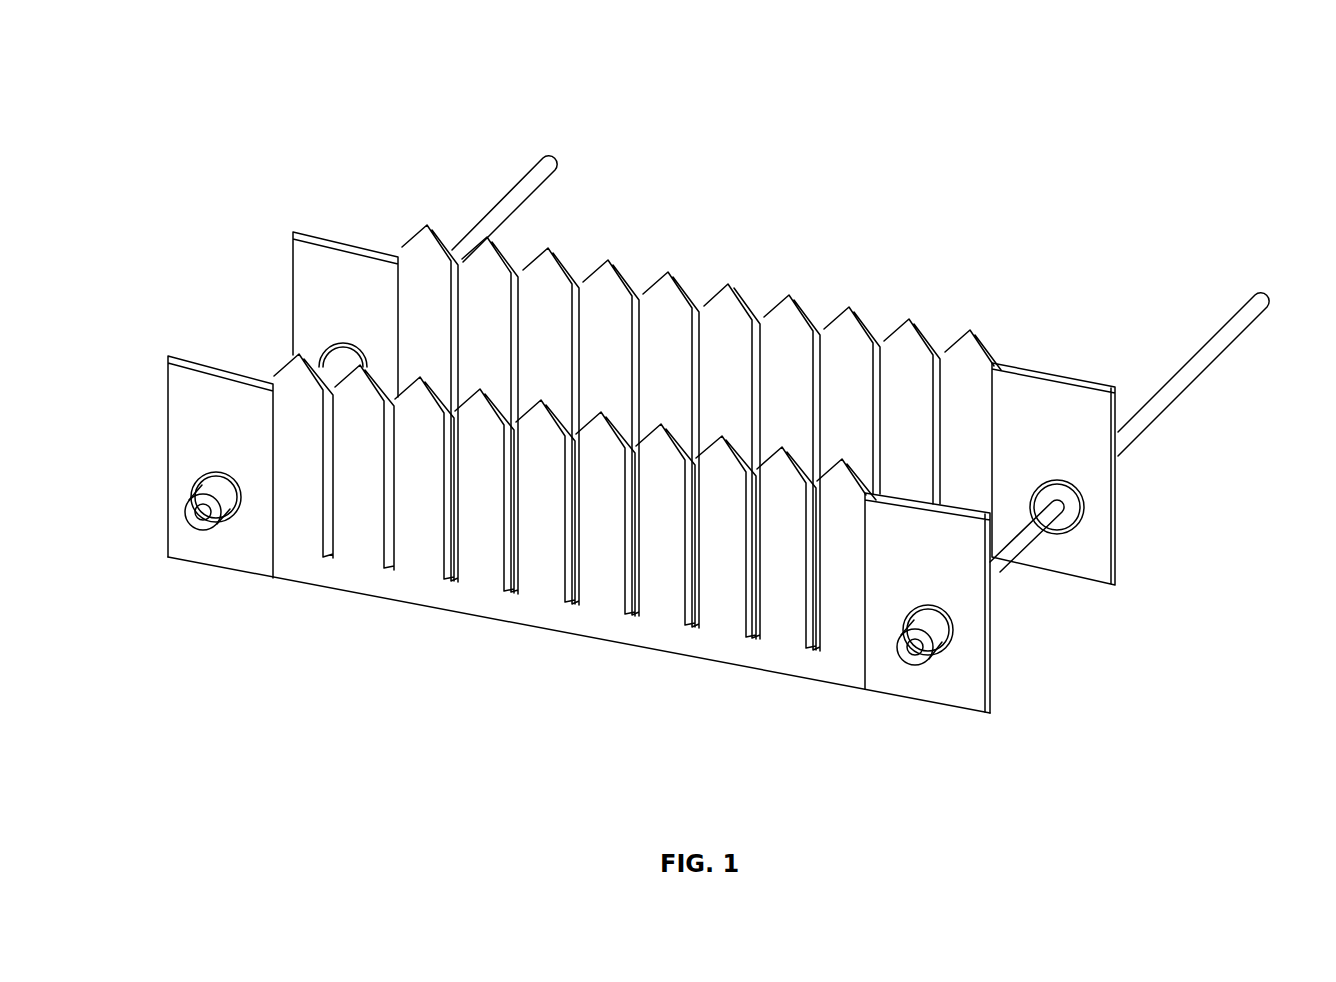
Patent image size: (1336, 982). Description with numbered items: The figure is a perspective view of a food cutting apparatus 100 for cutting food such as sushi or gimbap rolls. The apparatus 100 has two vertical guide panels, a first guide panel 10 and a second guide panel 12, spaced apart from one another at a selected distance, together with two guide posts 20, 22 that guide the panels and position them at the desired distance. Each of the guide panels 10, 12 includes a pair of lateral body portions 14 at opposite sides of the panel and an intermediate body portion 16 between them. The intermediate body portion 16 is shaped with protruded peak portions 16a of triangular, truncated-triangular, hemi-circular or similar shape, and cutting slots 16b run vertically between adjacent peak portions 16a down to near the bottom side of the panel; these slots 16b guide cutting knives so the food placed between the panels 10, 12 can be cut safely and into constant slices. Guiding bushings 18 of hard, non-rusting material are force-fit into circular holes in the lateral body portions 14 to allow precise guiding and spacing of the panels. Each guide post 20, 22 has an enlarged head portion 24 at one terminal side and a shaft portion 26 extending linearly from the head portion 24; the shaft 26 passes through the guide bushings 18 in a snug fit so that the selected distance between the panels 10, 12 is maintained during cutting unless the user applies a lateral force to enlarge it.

The food cutting apparatus 100 is at (967, 178).
The first guide panel 10 is at (295, 565).
The second guide panel 12 is at (360, 270).
The lateral body portion 14 is at (195, 545).
The intermediate body portion 16 is at (637, 416).
The protruded peak portion 16a is at (608, 265).
The cutting slot 16b is at (643, 283).
The guiding bushing 18 is at (947, 652).
The guide post 20 is at (527, 190).
The guide post 22 is at (1222, 336).
The enlarged head portion 24 is at (923, 660).
The shaft portion 26 is at (1020, 540).